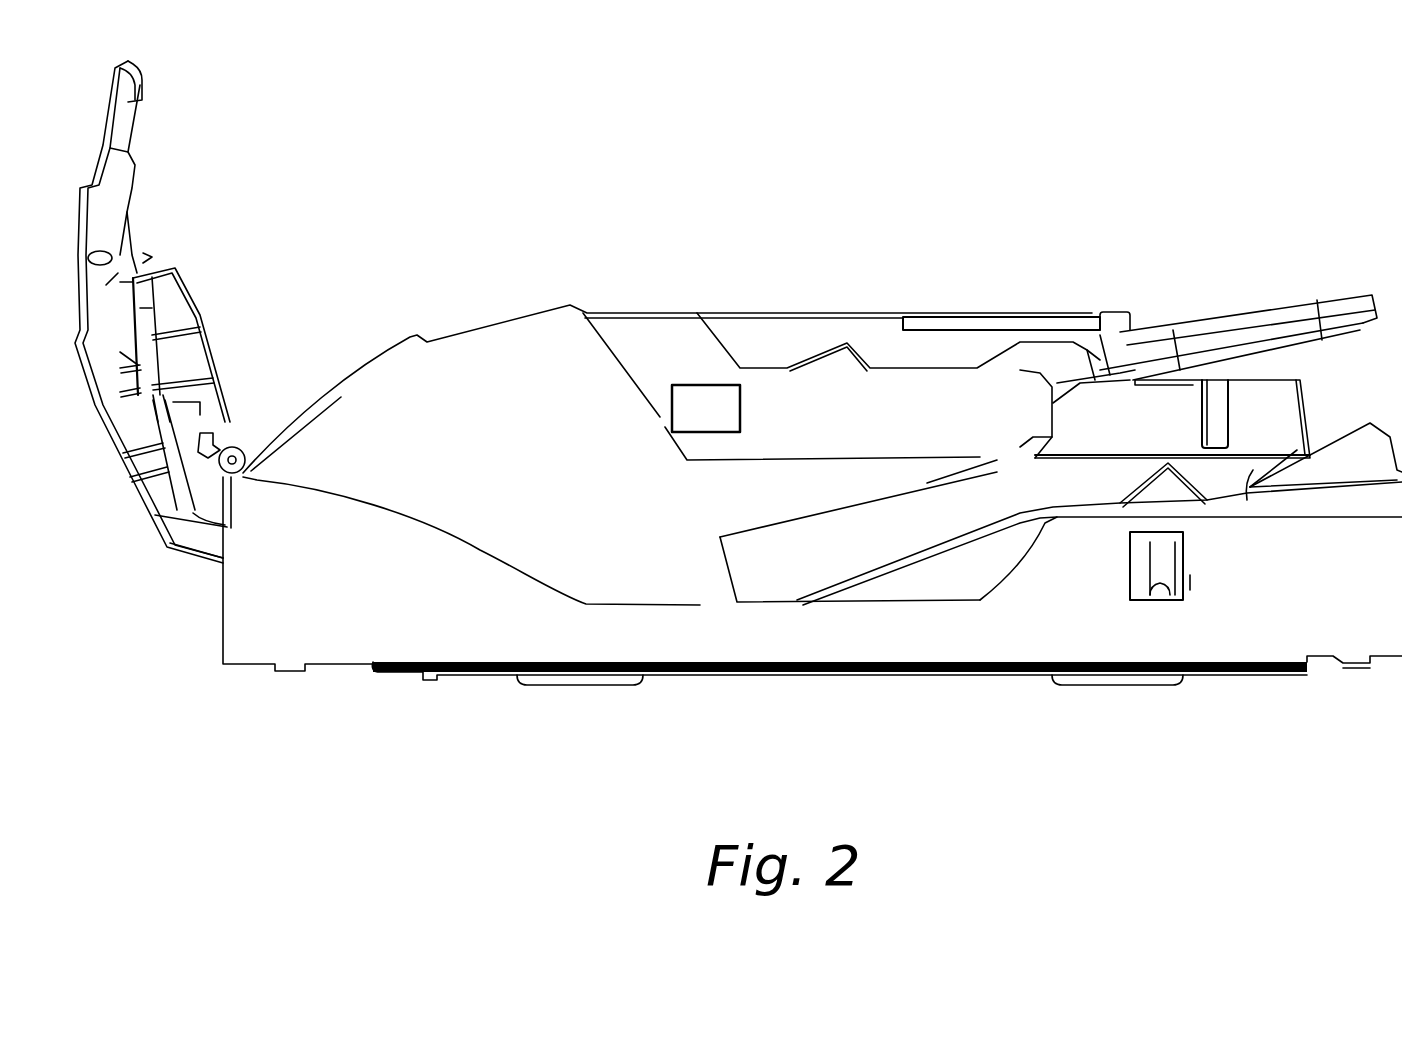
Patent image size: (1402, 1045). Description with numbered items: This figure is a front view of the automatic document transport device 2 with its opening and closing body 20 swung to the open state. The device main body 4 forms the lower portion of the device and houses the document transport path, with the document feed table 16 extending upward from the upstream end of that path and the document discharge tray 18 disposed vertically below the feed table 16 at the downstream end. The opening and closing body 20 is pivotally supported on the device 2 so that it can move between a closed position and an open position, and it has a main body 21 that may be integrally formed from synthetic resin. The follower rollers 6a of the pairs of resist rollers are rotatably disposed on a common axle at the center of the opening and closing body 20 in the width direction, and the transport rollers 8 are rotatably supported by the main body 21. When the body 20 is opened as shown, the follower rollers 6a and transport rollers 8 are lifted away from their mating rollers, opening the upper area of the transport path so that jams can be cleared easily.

The automatic document transport device 2 is at (858, 258).
The device main body 4 is at (217, 645).
The follower roller 6a is at (207, 322).
The transport roller 8 is at (240, 443).
The document feed table 16 is at (1227, 313).
The document discharge tray 18 is at (887, 563).
The opening and closing body 20 is at (243, 238).
The main body 21 is at (125, 475).